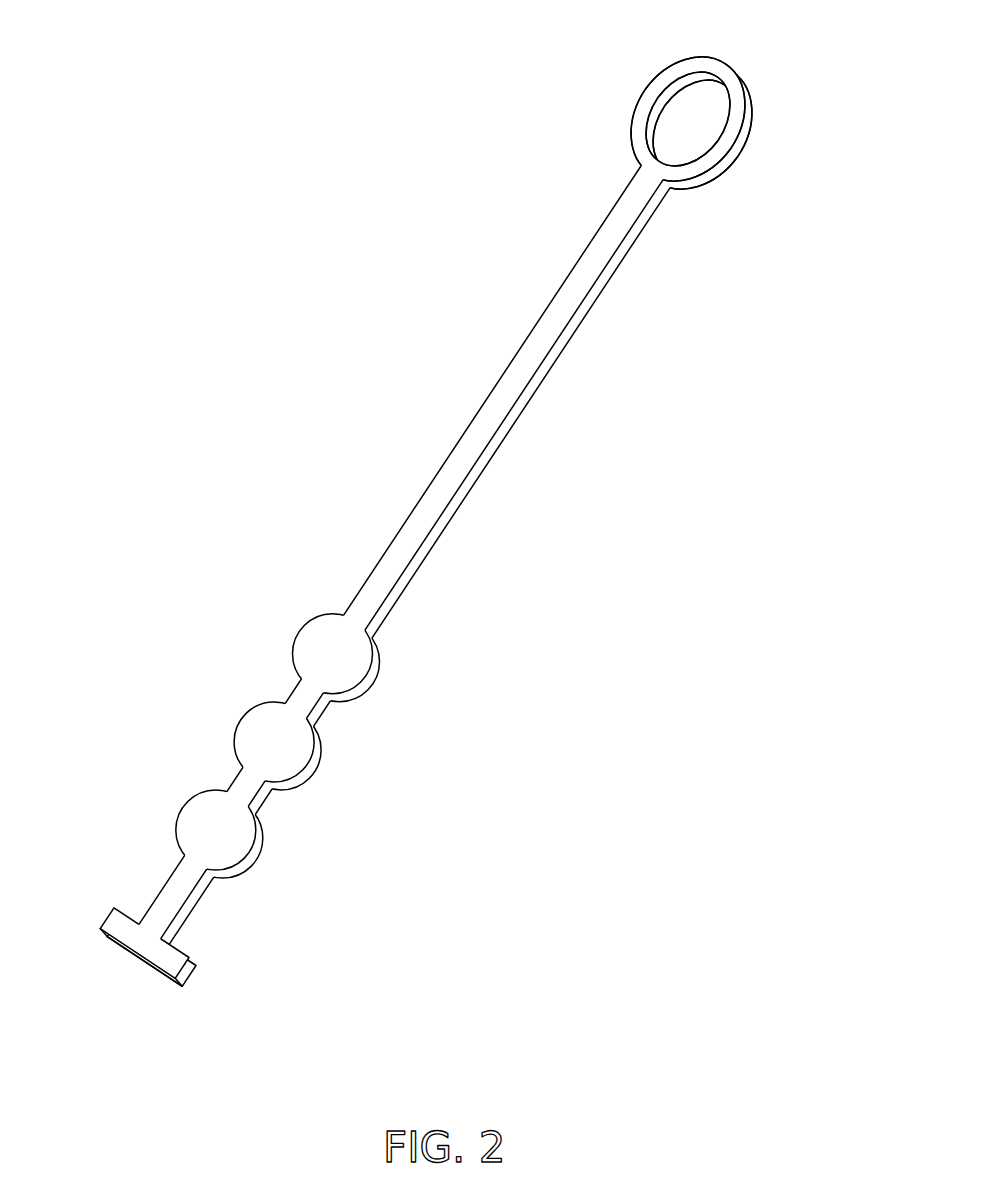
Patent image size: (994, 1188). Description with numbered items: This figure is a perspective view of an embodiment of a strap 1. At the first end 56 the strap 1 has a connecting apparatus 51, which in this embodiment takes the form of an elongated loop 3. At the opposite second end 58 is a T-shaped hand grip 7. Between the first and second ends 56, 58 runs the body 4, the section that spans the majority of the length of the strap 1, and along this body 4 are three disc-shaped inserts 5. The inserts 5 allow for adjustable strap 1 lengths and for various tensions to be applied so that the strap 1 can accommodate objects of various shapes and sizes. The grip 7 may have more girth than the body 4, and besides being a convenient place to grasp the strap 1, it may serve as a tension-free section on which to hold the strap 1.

The strap 1 is at (449, 529).
The elongated loop 3 is at (653, 91).
The body 4 is at (525, 366).
The disc-shaped inserts 5 is at (206, 840).
The T-shaped hand grip 7 is at (164, 953).
The connecting apparatus 51 is at (735, 156).
The first end 56 is at (747, 78).
The second end 58 is at (136, 972).